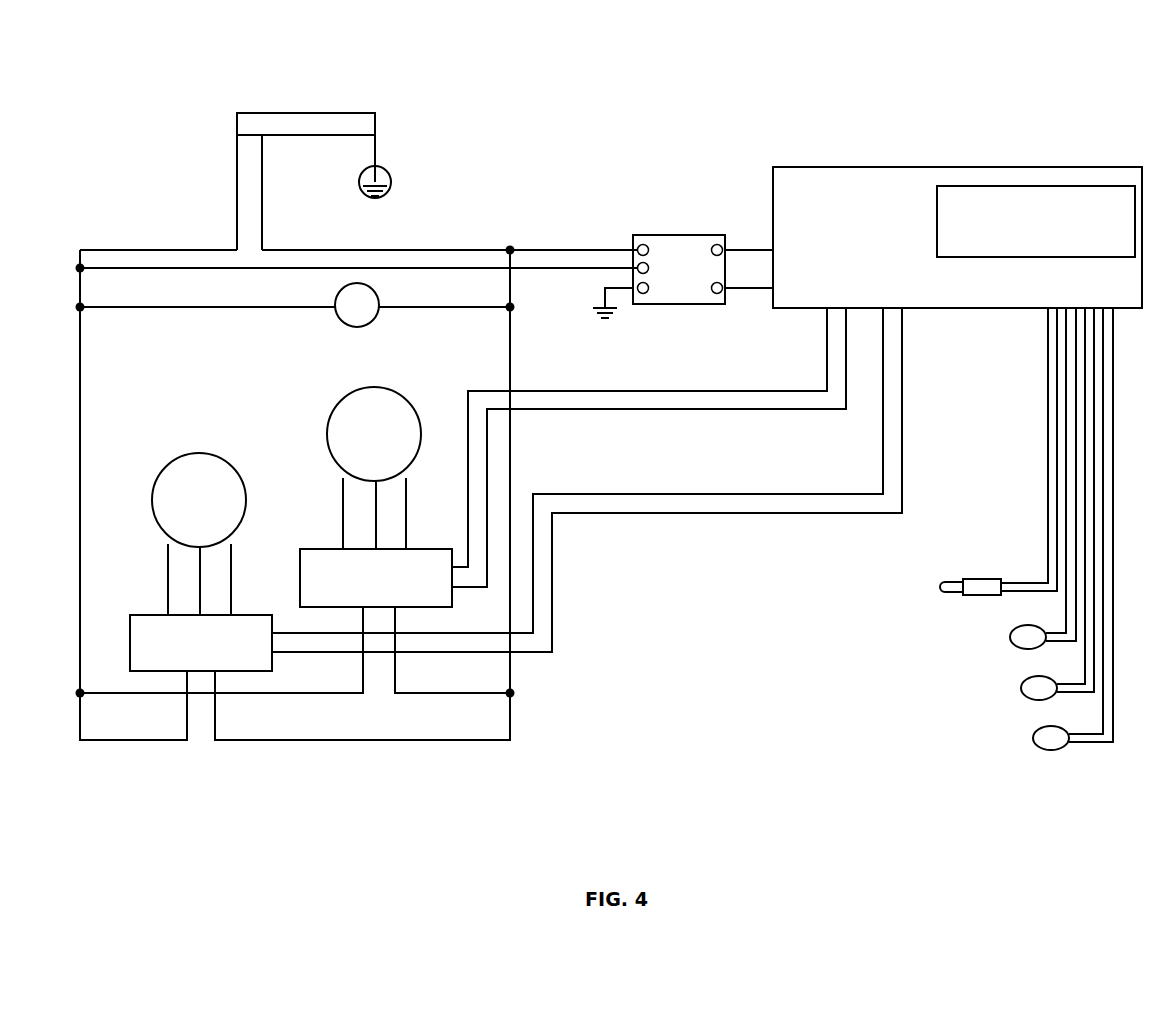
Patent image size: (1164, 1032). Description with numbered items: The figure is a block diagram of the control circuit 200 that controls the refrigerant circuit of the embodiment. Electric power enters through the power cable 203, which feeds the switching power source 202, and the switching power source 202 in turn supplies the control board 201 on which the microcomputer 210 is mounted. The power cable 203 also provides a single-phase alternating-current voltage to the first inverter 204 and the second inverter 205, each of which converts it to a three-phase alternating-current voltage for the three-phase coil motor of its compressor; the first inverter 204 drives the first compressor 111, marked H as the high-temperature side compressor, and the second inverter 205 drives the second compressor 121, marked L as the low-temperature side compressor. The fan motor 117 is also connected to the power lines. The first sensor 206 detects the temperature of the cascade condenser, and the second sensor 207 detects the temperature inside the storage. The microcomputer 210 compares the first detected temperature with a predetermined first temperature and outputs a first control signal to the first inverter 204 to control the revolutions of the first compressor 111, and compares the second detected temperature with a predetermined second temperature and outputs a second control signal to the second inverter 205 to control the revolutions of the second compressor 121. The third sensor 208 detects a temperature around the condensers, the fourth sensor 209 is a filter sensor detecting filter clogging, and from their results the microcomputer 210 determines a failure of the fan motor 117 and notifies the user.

The control circuit 200 is at (632, 92).
The control board 201 is at (790, 166).
The switching power source 202 is at (647, 234).
The power cable 203 is at (356, 112).
The first inverter 204 is at (150, 614).
The second inverter 205 is at (330, 548).
The first sensor 206 is at (1033, 736).
The second sensor 207 is at (944, 580).
The third sensor 208 is at (1010, 630).
The fourth sensor 209 is at (1021, 684).
The microcomputer 210 is at (1048, 186).
The first compressor 111 is at (185, 453).
The fan motor 117 is at (345, 328).
The second compressor 121 is at (399, 388).